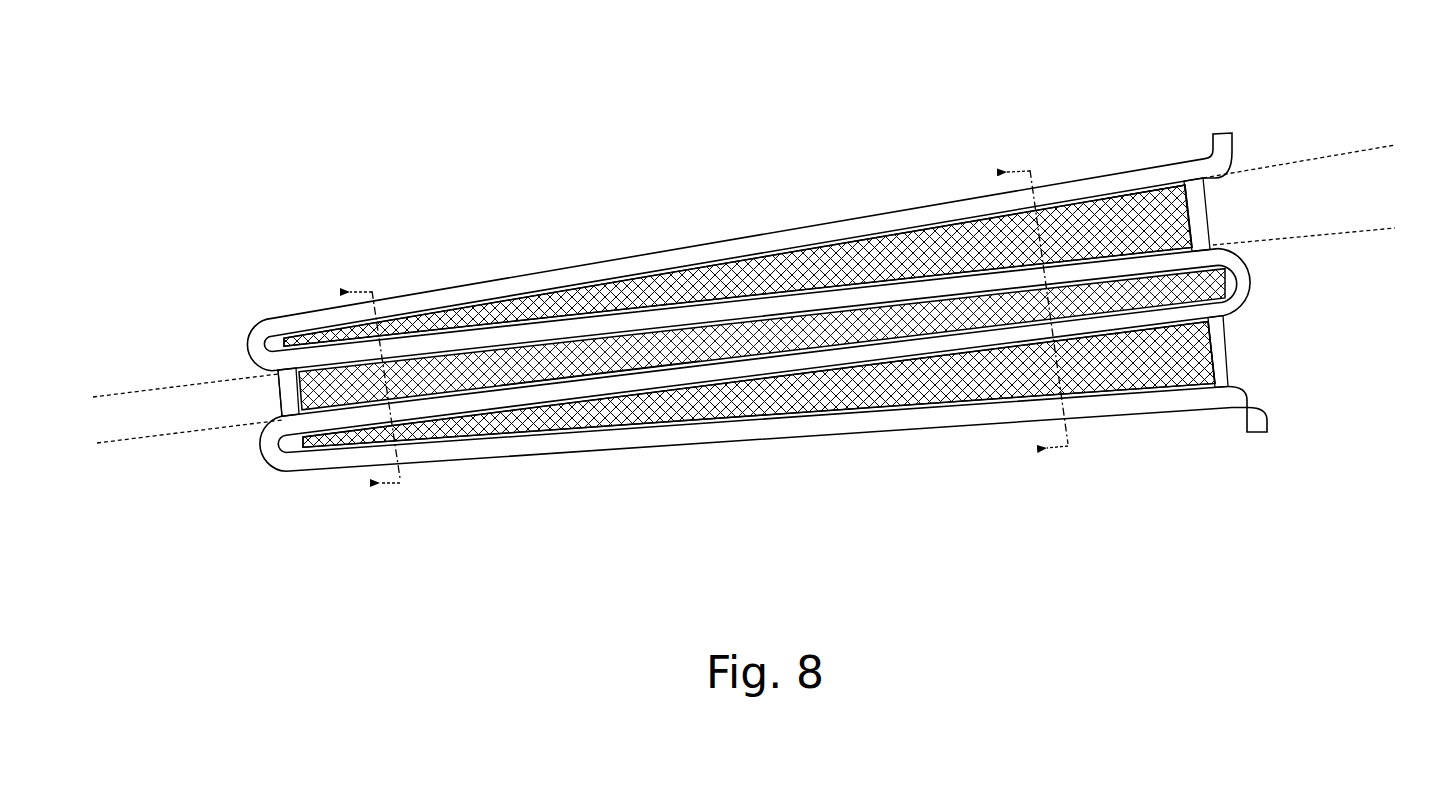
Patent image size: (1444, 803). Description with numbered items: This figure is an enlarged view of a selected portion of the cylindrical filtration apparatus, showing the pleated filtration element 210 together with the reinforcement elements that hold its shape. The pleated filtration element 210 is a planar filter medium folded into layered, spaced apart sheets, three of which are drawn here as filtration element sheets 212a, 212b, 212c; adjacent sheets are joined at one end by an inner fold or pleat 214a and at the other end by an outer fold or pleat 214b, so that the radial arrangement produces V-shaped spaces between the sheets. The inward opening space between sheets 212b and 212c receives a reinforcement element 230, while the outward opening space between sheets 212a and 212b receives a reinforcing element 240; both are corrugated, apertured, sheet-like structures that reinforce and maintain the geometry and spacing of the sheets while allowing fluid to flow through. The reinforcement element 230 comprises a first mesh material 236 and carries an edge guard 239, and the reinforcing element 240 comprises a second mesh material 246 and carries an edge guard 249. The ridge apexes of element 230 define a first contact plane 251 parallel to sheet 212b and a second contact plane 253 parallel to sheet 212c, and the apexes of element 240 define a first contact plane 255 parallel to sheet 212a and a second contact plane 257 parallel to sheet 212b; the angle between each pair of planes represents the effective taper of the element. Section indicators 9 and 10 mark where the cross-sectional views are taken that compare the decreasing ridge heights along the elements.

The pleated filtration element 210 is at (812, 224).
The filtration element sheet 212a is at (492, 302).
The filtration element sheet 212b is at (590, 332).
The filtration element sheet 212c is at (710, 370).
The inner fold or pleat 214a is at (262, 335).
The outer fold or pleat 214b is at (1253, 279).
The reinforcement element 230 is at (540, 385).
The first mesh material 236 is at (277, 403).
The edge guard 239 is at (270, 384).
The reinforcing element 240 is at (1122, 207).
The second mesh material 246 is at (1157, 222).
The edge guard 249 is at (1208, 194).
The first contact plane 251 is at (133, 440).
The second contact plane 253 is at (142, 392).
The first contact plane 255 is at (1358, 150).
The second contact plane 257 is at (1362, 232).
The section line 9- 9 is at (1037, 311).
The section line 10- 10 is at (370, 389).